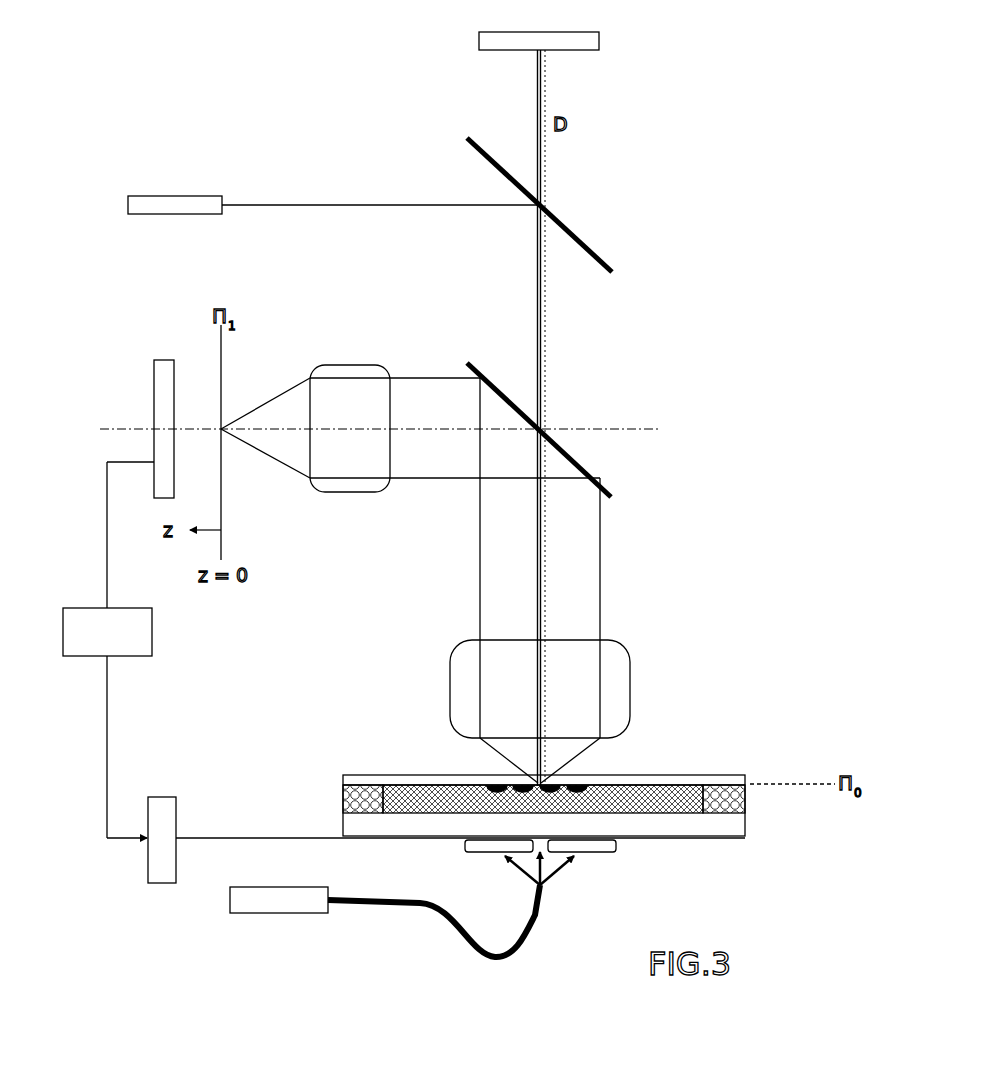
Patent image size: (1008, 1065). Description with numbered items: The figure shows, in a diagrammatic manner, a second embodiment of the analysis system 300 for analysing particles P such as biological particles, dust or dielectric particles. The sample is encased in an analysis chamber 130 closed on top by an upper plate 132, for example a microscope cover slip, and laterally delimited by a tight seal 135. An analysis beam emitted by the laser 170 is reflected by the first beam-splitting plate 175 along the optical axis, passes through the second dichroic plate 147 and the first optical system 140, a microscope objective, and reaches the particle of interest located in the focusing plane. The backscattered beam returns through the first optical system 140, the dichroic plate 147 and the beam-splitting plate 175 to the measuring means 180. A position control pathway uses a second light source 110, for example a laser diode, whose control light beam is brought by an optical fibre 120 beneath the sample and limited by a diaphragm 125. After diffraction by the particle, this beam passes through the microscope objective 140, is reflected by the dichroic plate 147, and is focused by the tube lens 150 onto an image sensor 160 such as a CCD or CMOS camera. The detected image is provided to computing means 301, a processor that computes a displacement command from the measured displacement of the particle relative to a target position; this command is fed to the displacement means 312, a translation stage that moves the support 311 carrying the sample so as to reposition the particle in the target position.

The second light source 110 is at (280, 920).
The optical fibre 120 is at (530, 950).
The diaphragm 125 is at (624, 852).
The analysis chamber 130 is at (526, 787).
The upper plate 132 is at (340, 778).
The tight seal 135 is at (340, 796).
The particles to be analysed P is at (487, 782).
The first optical system 140 is at (640, 677).
The second dichroic plate 147 is at (592, 465).
The tube lens 150 is at (363, 363).
The image sensor 160 is at (163, 362).
The laser 170 is at (160, 193).
The first beam-splitting plate 175 is at (606, 245).
The measuring means 180 is at (472, 55).
The analysis system 300 is at (630, 136).
The computing means 301 is at (125, 632).
The support 311 is at (213, 841).
The displacement means 312 is at (157, 868).